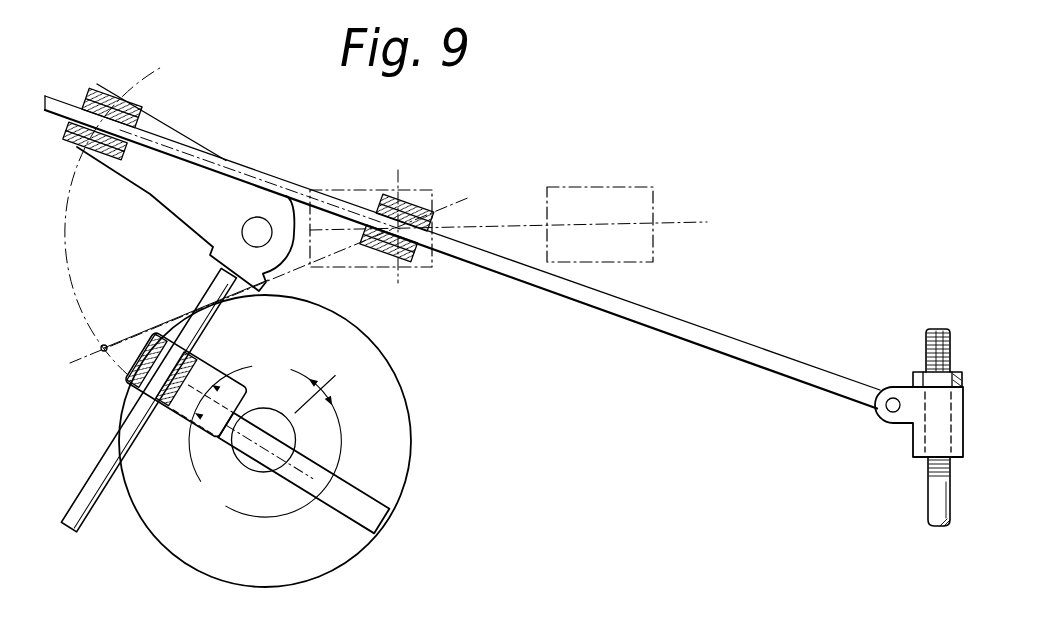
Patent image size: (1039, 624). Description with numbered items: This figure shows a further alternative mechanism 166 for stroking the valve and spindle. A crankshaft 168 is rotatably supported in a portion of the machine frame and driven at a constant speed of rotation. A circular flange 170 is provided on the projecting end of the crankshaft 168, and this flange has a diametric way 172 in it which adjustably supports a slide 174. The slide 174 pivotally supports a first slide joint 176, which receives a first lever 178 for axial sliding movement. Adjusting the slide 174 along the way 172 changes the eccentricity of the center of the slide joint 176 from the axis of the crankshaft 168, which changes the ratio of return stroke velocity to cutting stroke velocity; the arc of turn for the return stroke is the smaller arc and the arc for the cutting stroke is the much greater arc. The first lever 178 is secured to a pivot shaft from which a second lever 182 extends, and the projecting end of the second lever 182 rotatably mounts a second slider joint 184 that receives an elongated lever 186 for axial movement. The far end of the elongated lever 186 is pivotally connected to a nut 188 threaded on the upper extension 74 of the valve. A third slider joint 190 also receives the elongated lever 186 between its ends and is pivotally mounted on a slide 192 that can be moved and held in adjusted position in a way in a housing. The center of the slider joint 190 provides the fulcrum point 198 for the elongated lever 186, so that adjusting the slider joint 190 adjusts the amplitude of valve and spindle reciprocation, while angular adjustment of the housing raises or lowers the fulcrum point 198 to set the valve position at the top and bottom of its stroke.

The upper extension 74 is at (935, 497).
The alternative mechanism 166 is at (455, 183).
The crankshaft 168 is at (262, 473).
The circular flange 170 is at (407, 428).
The diametric way 172 is at (363, 508).
The slide 174 is at (212, 362).
The first slide joint 176 is at (133, 350).
The first lever 178 is at (84, 506).
The second lever 182 is at (147, 178).
The second slider joint 184 is at (110, 92).
The elongated lever 186 is at (720, 340).
The nut 188 is at (920, 440).
The third slider joint 190 is at (405, 207).
The slide 192 is at (343, 192).
The fulcrum point 198 is at (418, 250).